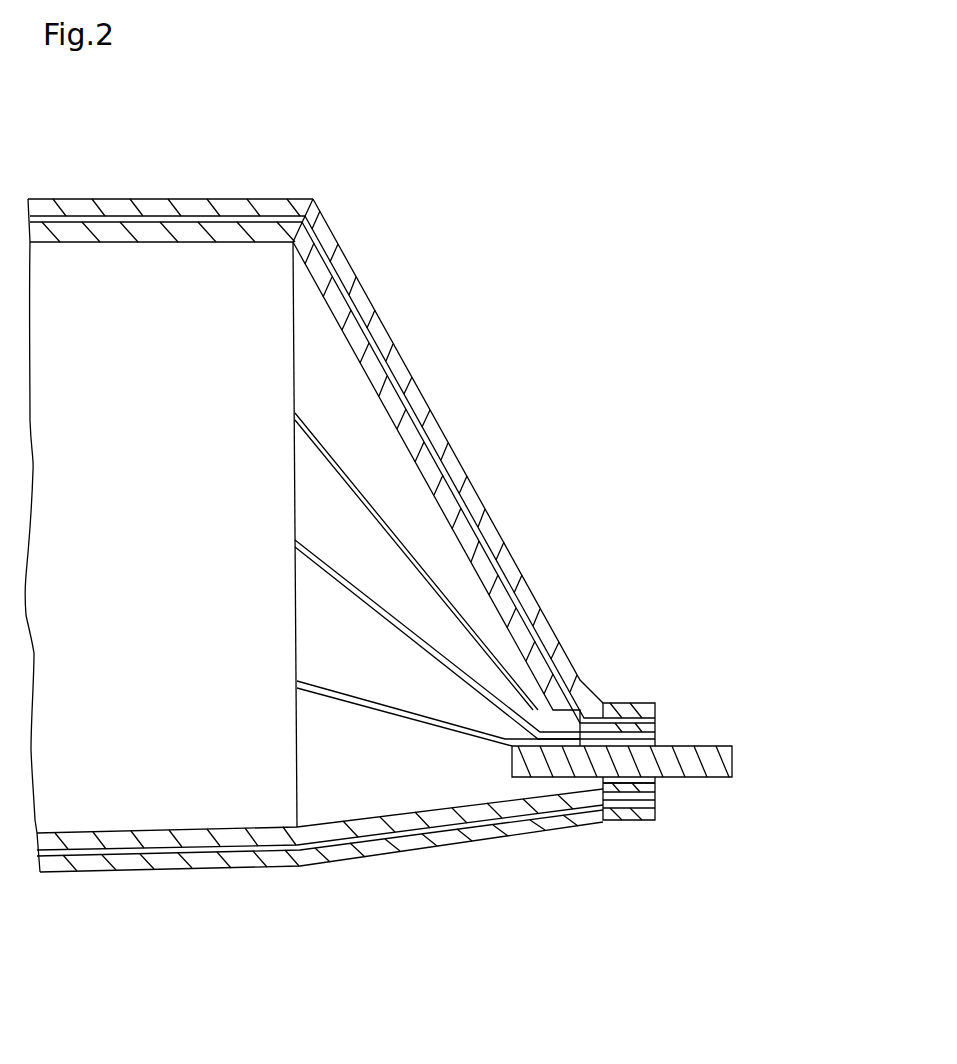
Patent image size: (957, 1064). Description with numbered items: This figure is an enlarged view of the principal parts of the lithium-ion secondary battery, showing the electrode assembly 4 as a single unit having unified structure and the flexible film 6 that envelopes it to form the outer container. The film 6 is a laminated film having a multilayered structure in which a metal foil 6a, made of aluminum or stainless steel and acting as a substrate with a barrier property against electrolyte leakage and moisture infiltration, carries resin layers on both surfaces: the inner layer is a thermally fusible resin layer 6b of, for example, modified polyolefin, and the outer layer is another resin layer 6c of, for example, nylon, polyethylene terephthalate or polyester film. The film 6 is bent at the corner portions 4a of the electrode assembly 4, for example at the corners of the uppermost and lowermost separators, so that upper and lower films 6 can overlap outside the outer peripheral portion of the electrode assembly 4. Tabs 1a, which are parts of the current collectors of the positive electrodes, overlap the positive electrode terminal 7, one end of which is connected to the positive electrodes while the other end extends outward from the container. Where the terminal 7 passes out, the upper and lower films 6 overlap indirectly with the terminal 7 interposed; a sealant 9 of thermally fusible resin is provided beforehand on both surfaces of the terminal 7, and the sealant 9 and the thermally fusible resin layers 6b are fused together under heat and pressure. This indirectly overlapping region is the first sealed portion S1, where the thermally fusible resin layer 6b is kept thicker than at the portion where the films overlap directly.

The electrode assembly 4 is at (250, 283).
The corner portions 4a is at (313, 213).
The flexible film 6 is at (577, 282).
The metal foil 6a is at (407, 405).
The thermally fusible resin layer 6b is at (415, 458).
The resin layer 6c is at (453, 468).
The tabs 1a is at (440, 720).
The first sealed portions S1 is at (635, 690).
The positive electrode terminal 7 is at (695, 763).
The sealant 9 is at (618, 783).